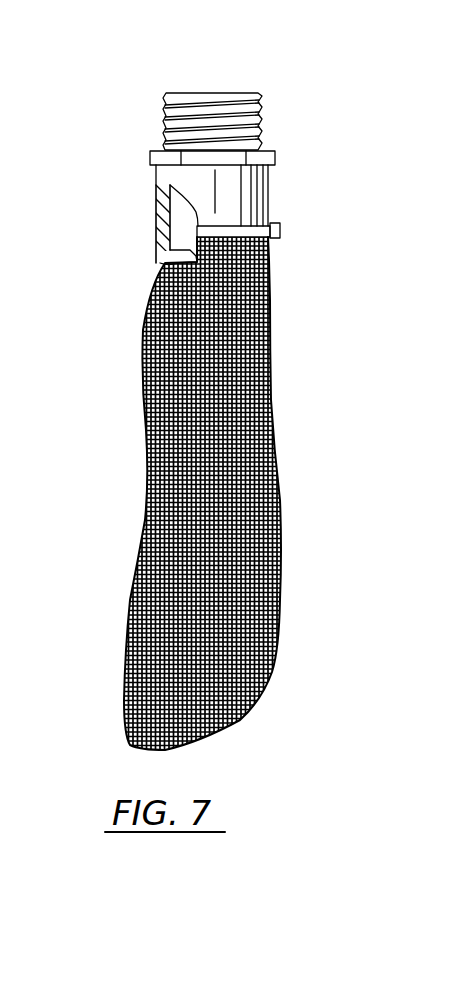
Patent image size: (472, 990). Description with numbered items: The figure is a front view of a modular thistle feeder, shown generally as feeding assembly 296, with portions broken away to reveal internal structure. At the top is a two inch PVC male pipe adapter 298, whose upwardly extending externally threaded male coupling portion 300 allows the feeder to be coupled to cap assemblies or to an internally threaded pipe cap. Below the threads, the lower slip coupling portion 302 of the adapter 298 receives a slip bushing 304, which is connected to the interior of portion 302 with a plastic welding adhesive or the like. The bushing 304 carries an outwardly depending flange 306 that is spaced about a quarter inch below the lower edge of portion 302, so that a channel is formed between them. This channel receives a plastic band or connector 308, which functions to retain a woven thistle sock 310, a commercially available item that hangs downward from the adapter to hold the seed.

The feeding assembly 296 is at (305, 88).
The male pipe adapter 298 is at (150, 160).
The externally threaded male coupling portion 300 is at (165, 112).
The lower slip coupling portion 302 is at (268, 191).
The slip bushing 304 is at (155, 226).
The flange 306 is at (158, 258).
The plastic band or connector 308 is at (280, 232).
The woven thistle sock 310 is at (283, 510).